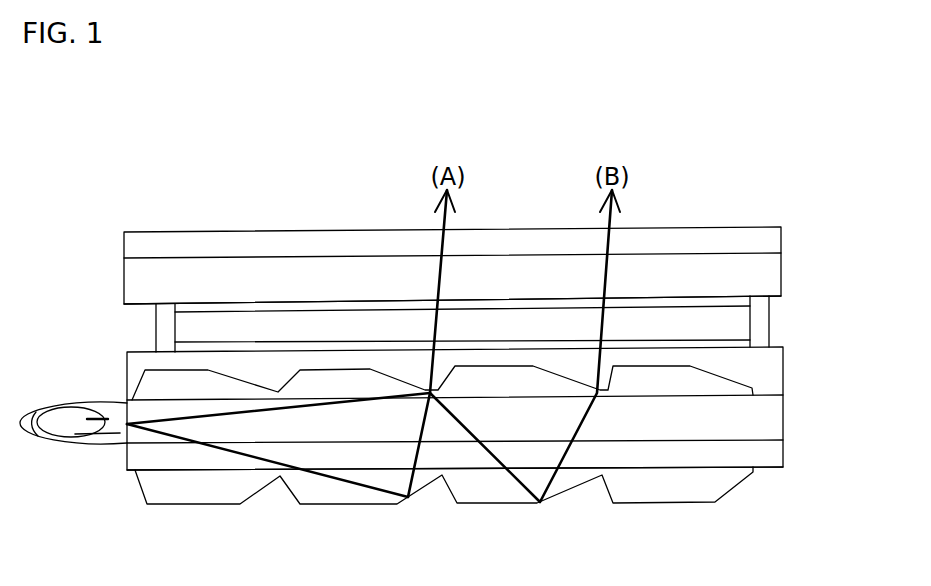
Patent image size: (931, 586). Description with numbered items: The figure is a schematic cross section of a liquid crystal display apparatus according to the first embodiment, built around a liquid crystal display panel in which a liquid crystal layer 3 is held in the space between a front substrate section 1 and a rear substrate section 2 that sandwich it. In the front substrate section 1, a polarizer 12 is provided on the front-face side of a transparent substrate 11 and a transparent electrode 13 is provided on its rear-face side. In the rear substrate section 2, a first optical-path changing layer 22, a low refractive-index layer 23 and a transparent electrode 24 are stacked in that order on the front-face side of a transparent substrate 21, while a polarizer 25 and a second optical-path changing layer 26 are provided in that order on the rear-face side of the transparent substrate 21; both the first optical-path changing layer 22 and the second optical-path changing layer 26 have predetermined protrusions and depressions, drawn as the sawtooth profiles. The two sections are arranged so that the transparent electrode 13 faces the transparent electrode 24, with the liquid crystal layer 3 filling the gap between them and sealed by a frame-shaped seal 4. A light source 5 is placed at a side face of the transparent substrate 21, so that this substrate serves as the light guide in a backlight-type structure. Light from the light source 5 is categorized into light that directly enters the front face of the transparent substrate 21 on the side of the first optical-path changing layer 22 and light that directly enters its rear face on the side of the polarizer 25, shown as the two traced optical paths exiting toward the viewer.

The front substrate section 1 is at (853, 222).
The rear substrate section 2 is at (853, 502).
The liquid crystal layer 3 is at (180, 323).
The seal 4 is at (157, 342).
The light source 5 is at (55, 405).
The transparent substrate 11 is at (781, 273).
The polarizer 12 is at (781, 241).
The transparent electrode 13 is at (743, 304).
The transparent substrate 21 is at (783, 419).
The first optical-path changing layer 22 is at (783, 393).
The low refractive-index layer 23 is at (783, 368).
The transparent electrode 24 is at (743, 346).
The polarizer 25 is at (783, 454).
The second optical-path changing layer 26 is at (727, 491).